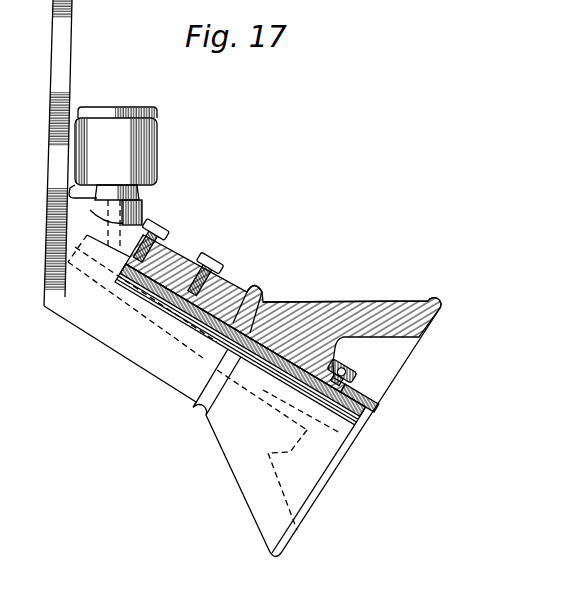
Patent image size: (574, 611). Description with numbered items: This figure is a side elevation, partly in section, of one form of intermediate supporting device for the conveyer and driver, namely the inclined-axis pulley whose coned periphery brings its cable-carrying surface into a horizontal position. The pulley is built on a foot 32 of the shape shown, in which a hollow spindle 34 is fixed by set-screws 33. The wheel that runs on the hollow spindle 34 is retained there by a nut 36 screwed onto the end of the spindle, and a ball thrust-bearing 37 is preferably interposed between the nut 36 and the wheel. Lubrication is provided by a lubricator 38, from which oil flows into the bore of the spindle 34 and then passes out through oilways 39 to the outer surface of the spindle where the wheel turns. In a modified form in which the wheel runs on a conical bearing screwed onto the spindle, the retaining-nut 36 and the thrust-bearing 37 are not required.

The foot 32 is at (57, 113).
The set-screws 33 is at (208, 255).
The hollow spindle 34 is at (263, 291).
The nut 36 is at (373, 410).
The ball thrust-bearing 37 is at (356, 368).
The lubricator 38 is at (157, 178).
The oilways 39 is at (247, 380).